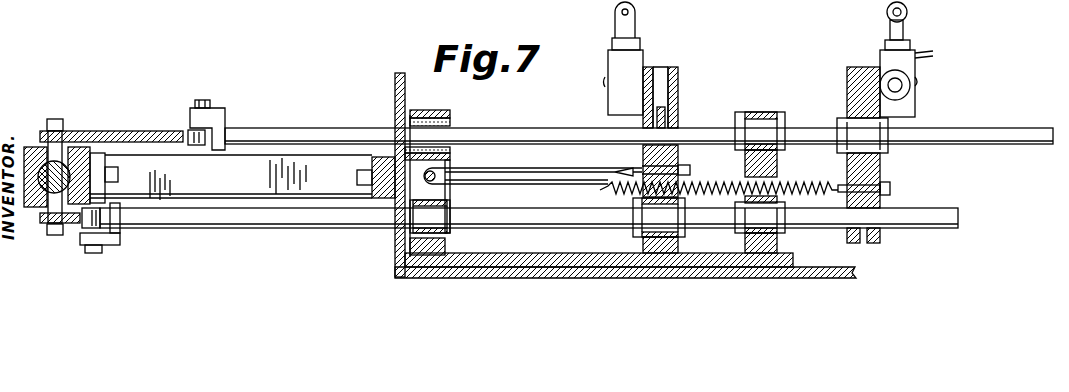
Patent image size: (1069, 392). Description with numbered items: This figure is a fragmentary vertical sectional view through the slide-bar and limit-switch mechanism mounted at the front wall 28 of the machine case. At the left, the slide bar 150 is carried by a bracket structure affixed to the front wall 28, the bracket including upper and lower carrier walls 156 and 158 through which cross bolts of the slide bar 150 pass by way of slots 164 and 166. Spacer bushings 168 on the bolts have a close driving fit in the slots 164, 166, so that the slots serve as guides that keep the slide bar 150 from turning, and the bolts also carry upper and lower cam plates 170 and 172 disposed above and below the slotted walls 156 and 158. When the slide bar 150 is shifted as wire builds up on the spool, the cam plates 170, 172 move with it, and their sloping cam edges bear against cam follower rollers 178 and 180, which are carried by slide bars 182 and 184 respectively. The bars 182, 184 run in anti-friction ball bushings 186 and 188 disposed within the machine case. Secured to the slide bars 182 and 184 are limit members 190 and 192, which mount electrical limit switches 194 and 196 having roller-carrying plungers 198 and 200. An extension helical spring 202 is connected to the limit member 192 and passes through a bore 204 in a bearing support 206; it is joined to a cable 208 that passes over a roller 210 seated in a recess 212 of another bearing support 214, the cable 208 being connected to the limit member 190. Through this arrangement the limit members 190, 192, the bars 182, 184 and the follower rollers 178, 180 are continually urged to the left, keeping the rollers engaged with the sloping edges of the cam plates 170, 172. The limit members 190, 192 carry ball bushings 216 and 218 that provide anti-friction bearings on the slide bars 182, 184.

The front wall 28 is at (393, 258).
The slide bar 150 is at (100, 158).
The upper carrier wall 156 is at (32, 208).
The lower carrier wall 158 is at (37, 147).
The slot 164 is at (87, 141).
The slot 166 is at (143, 225).
The spacer bushing 168 is at (67, 131).
The upper cam plate 170 is at (93, 133).
The lower cam plate 172 is at (72, 228).
The cam follower roller 178 is at (196, 150).
The cam follower roller 180 is at (112, 240).
The slide bar 182 is at (332, 128).
The slide bar 184 is at (335, 228).
The anti-friction ball bushing 186 is at (452, 123).
The anti-friction ball bushing 188 is at (450, 233).
The limit member 190 is at (679, 83).
The limit member 192 is at (855, 67).
The electrical limit switch 194 is at (609, 103).
The electrical limit switch 196 is at (907, 105).
The roller-carrying plunger 198 is at (633, 28).
The roller-carrying plunger 200 is at (907, 28).
The extension helical spring 202 is at (813, 181).
The bore 204 is at (748, 173).
The bearing support 206 is at (760, 112).
The cable 208 is at (553, 167).
The roller 210 is at (437, 181).
The recess 212 is at (450, 165).
The bearing support 214 is at (431, 110).
The ball bushing 216 is at (630, 233).
The ball bushing 218 is at (880, 153).